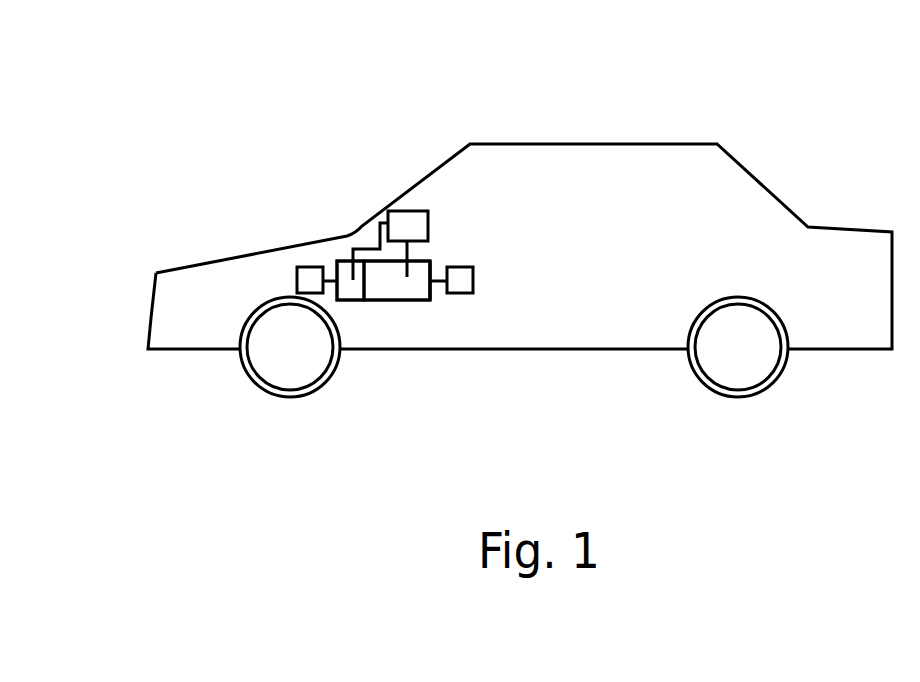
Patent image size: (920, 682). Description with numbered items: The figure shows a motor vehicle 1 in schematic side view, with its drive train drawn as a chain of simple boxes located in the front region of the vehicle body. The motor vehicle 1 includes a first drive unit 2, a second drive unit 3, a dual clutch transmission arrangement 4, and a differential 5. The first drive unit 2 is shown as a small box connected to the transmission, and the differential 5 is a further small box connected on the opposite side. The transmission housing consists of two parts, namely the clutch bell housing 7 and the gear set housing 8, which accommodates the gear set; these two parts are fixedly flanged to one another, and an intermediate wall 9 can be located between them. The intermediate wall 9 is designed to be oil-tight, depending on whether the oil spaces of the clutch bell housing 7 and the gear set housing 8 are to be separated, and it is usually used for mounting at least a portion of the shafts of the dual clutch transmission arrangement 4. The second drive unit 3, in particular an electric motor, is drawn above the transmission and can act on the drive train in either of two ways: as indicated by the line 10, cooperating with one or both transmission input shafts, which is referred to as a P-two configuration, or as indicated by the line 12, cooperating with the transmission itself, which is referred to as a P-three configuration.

The motor vehicle 1 is at (393, 90).
The first drive unit 2 is at (296, 280).
The second drive unit 3 is at (418, 220).
The dual clutch transmission arrangement 4 is at (440, 257).
The differential 5 is at (460, 294).
The clutch bell housing 7 is at (340, 262).
The gear set housing 8 is at (413, 300).
The intermediate wall 9 is at (362, 293).
The line 10 is at (410, 249).
The line 12 is at (371, 249).